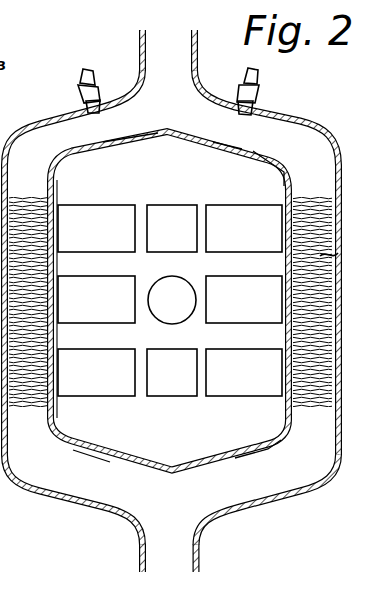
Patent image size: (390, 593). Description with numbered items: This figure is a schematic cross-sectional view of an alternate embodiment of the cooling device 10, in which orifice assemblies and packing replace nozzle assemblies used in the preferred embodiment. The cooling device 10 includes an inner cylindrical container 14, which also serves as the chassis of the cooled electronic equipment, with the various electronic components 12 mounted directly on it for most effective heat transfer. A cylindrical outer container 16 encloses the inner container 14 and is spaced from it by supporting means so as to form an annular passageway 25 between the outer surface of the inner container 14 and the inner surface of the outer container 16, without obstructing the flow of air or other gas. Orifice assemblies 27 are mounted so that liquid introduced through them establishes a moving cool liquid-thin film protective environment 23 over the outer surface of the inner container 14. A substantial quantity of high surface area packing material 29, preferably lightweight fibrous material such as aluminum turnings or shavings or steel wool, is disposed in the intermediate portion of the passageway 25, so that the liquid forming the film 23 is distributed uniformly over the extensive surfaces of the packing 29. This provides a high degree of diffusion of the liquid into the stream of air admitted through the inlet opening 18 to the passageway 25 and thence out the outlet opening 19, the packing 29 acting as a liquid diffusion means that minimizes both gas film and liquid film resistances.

The cooling device 10 is at (326, 112).
The electronic components 12 is at (106, 237).
The inner cylindrical container 14 is at (157, 142).
The cylindrical outer container 16 is at (295, 495).
The inlet opening 18 is at (179, 563).
The outlet opening 19 is at (179, 52).
The cool liquid-thin film protective environment 23 is at (102, 144).
The annular passageway 25 is at (37, 191).
The orifice assemblies 27 is at (78, 94).
The packing material 29 is at (338, 253).